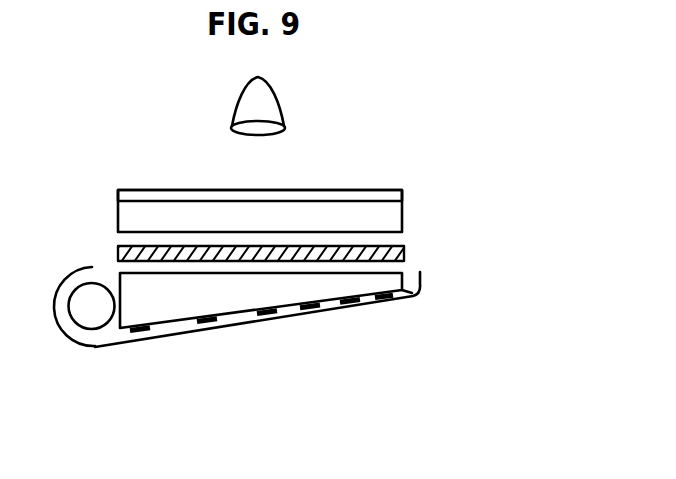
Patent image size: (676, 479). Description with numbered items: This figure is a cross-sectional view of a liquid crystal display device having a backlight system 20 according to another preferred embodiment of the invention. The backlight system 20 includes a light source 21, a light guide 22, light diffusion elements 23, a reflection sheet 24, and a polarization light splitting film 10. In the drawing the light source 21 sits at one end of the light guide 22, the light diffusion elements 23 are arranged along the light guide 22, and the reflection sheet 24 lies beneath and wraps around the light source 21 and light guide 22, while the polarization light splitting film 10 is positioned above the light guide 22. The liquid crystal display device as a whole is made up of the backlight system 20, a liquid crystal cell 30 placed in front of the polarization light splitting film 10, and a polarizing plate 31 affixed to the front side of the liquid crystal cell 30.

The polarization light splitting film 10 is at (403, 250).
The backlight system 20 is at (234, 373).
The light source 21 is at (87, 313).
The light guide 22 is at (193, 298).
The light diffusion elements 23 is at (261, 350).
The reflection sheet 24 is at (392, 303).
The liquid crystal cell 30 is at (398, 223).
The polarizing plate 31 is at (402, 193).